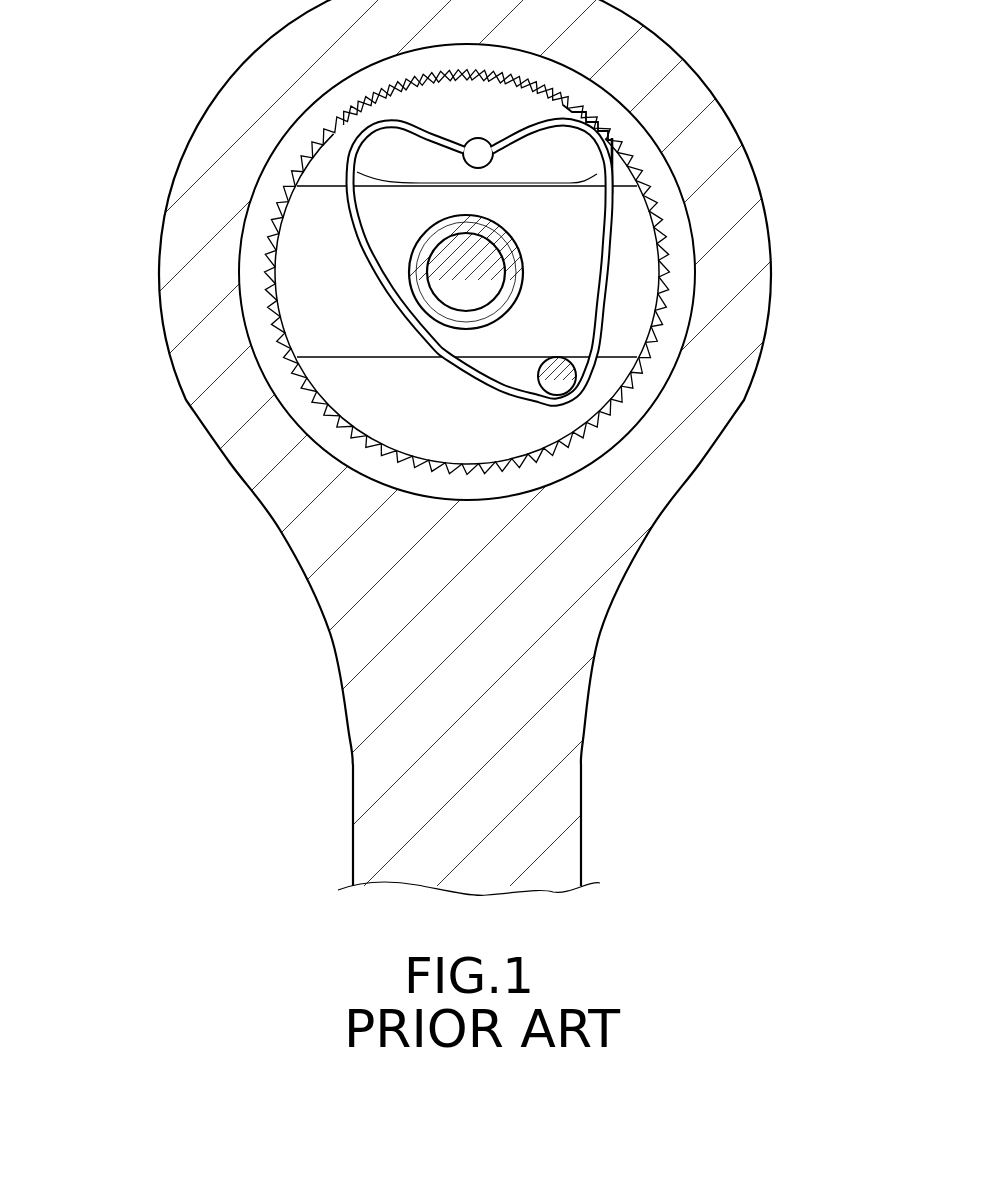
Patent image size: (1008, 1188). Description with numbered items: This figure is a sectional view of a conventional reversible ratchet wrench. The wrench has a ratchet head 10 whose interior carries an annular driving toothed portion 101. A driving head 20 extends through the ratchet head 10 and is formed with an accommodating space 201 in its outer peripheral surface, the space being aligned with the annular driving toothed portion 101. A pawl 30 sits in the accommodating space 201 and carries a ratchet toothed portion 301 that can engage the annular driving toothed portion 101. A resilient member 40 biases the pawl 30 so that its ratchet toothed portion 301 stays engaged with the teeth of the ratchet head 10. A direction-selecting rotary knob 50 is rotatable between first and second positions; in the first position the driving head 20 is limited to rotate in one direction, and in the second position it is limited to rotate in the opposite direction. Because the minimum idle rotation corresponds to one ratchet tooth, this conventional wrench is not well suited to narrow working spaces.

The ratchet head 10 is at (165, 215).
The annular driving toothed portion 101 is at (597, 427).
The driving head 20 is at (627, 260).
The accommodating space 201 is at (617, 168).
The pawl 30 is at (486, 118).
The ratchet toothed portion 301 is at (583, 103).
The resilient member 40 is at (448, 357).
The direction-selecting rotary knob 50 is at (578, 374).